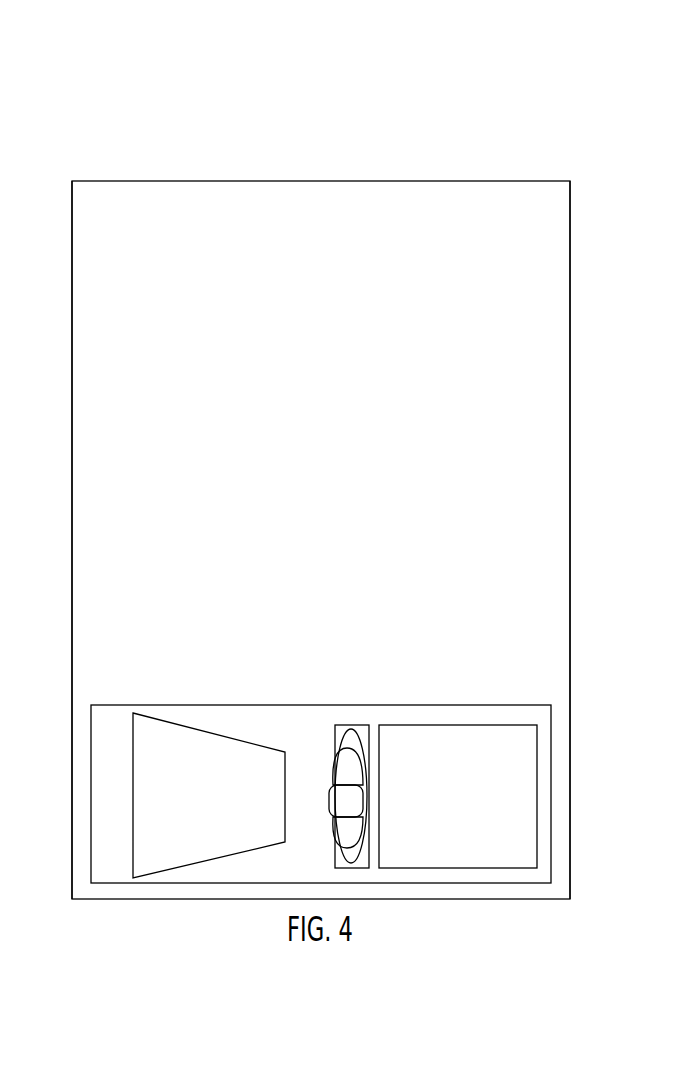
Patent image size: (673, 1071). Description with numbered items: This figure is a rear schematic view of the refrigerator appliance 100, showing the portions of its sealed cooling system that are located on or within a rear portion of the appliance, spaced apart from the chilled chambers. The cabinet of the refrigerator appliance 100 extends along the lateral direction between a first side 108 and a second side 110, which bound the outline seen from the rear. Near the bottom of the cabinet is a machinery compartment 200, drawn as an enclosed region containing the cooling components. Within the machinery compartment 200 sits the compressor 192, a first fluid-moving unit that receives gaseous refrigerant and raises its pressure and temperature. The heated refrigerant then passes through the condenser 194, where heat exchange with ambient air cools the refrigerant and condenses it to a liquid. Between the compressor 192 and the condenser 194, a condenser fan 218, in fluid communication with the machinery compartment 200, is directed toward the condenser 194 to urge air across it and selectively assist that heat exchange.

The refrigerator appliance 100 is at (160, 148).
The first side 108 is at (584, 443).
The second side 110 is at (52, 416).
The compressor 192 is at (168, 855).
The condenser 194 is at (510, 835).
The machinery compartment 200 is at (281, 721).
The condenser fan 218 is at (350, 743).